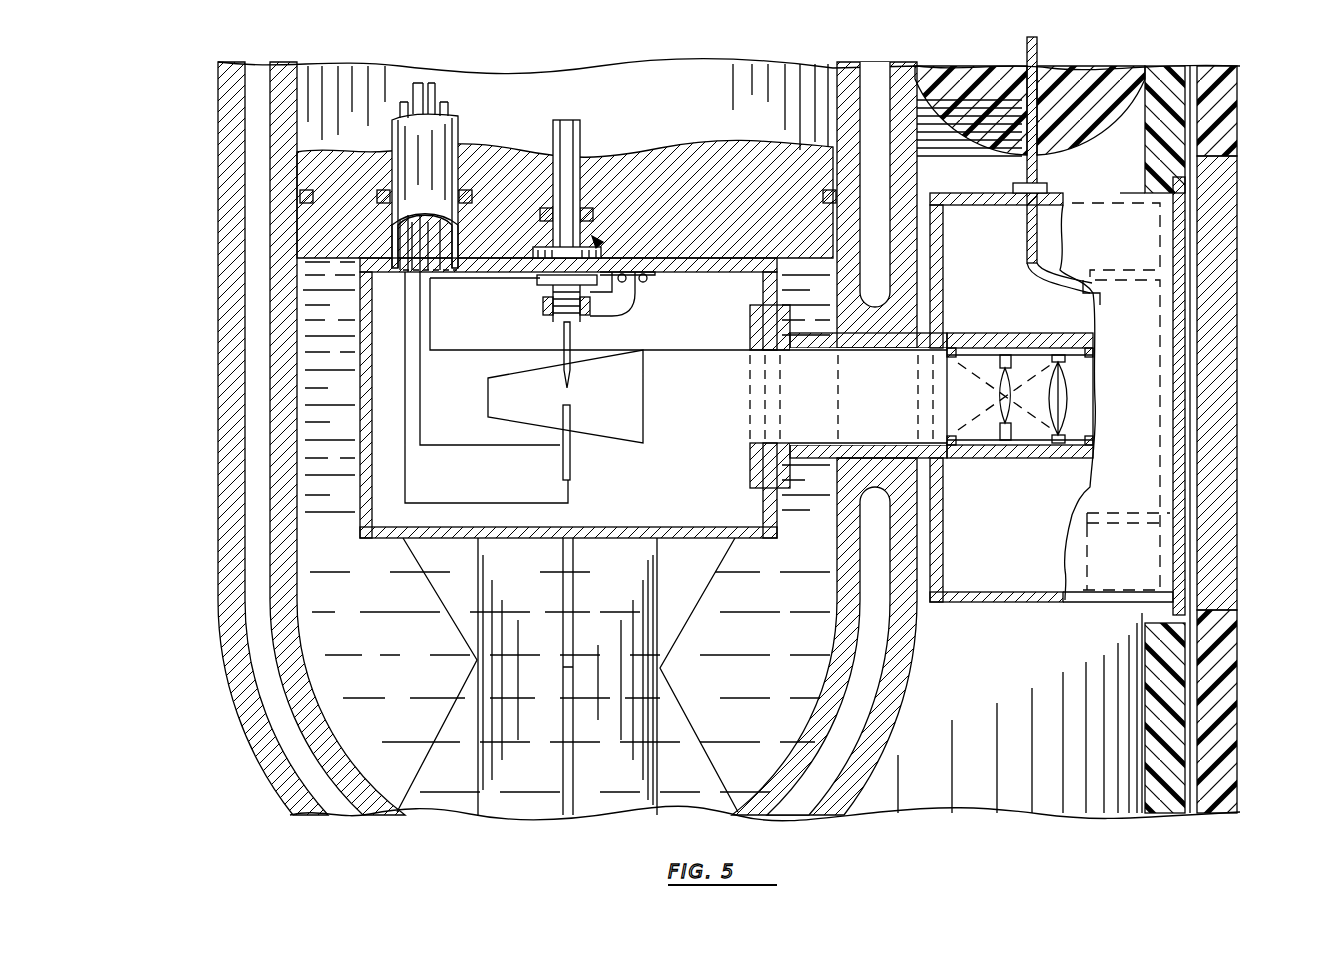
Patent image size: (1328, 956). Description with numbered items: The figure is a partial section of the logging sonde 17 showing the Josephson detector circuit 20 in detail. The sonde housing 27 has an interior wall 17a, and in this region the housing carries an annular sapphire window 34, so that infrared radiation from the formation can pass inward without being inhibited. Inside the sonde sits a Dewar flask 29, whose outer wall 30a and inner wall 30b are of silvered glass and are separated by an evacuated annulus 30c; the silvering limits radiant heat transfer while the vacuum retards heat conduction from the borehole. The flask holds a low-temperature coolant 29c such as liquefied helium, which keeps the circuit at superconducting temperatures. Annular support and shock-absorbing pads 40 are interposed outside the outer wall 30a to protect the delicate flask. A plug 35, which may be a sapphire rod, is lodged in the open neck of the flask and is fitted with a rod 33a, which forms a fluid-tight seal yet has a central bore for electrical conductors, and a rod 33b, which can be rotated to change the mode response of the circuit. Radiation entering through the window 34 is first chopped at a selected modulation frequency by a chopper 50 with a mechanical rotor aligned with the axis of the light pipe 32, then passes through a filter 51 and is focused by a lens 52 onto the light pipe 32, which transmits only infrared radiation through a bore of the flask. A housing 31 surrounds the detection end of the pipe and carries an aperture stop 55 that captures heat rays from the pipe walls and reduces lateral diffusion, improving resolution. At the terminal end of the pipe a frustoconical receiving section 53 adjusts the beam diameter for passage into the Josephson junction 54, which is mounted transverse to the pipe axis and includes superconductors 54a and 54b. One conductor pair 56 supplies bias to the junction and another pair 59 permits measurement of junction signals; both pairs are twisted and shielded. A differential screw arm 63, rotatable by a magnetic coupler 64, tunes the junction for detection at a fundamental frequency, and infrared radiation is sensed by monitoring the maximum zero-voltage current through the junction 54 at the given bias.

The logging sonde 17 is at (1244, 439).
The interior wall 17a is at (1185, 775).
The Josephson detector circuit 20 is at (542, 376).
The housing 27 is at (1213, 725).
The Dewar flask 29 is at (515, 438).
The low-temperature coolant 29c is at (405, 645).
The outer wall 30a is at (219, 558).
The inner wall 30b is at (271, 502).
The evacuated annulus 30c is at (262, 645).
The housing 31 is at (997, 603).
The light pipe 32 is at (893, 412).
The rod 33a is at (455, 128).
The rod 33b is at (578, 120).
The annular sapphire window 34 is at (1209, 448).
The plug 35 is at (725, 163).
The support and shock-absorbing pads 40 is at (1100, 90).
The chopper 50 is at (1150, 325).
The filter 51 is at (1053, 360).
The lens 52 is at (1050, 360).
The frustoconical receiving section 53 is at (515, 412).
The Josephson junction 54 is at (629, 404).
The superconductor 54a is at (572, 357).
The superconductor 54b is at (572, 462).
The aperture stop 55 is at (953, 347).
The conductor pair 56 is at (408, 287).
The conductor pair 59 is at (422, 325).
The differential screw arm 63 is at (542, 288).
The magnetic coupler 64 is at (598, 240).